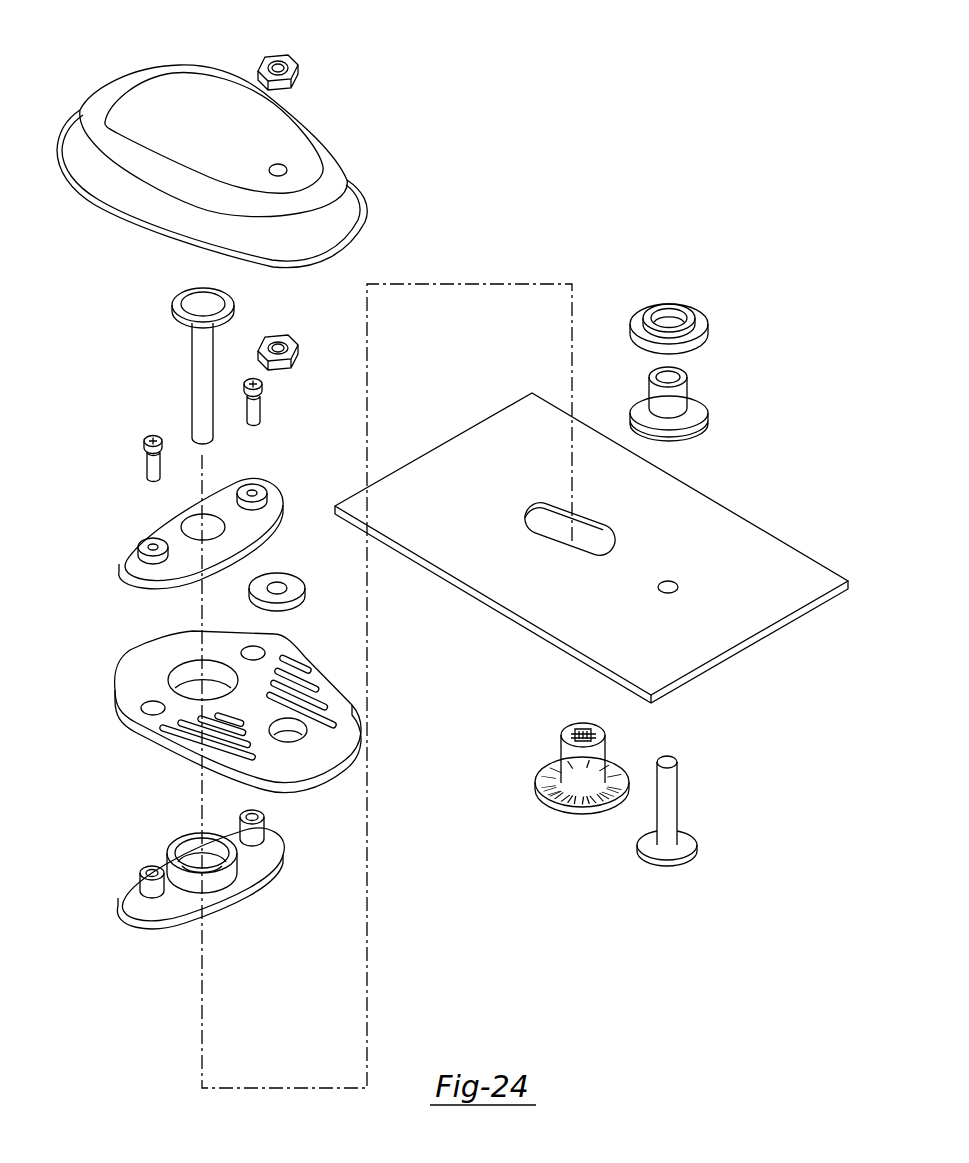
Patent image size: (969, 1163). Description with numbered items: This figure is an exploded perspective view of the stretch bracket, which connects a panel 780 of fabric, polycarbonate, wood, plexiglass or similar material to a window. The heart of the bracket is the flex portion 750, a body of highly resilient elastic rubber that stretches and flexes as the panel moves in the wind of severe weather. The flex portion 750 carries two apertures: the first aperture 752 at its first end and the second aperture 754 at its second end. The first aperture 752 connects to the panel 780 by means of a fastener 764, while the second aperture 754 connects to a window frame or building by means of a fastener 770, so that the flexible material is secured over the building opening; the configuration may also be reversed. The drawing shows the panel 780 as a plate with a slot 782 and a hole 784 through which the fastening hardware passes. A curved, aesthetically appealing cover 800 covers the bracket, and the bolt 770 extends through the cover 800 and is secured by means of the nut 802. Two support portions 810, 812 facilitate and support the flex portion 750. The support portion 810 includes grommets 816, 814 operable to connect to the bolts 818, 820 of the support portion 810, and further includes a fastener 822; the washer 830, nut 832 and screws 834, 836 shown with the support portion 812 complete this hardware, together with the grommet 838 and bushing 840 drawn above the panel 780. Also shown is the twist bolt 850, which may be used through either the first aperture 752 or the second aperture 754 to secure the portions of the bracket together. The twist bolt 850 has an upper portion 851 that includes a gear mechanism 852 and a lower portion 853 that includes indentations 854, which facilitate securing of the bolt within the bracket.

The flex portion 750 is at (130, 677).
The first aperture 752 is at (190, 677).
The second aperture 754 is at (285, 730).
The fastener 764 is at (198, 348).
The fastener 770 is at (672, 792).
The panel 780 is at (763, 552).
The slot 782 is at (590, 537).
The hole 784 is at (670, 583).
The cover 800 is at (347, 210).
The nut 802 is at (153, 83).
The support portion 810 is at (262, 871).
The support portion 812 is at (170, 513).
The grommet 814 is at (240, 490).
The grommet 816 is at (140, 546).
The bolt 818 is at (146, 868).
The bolt 820 is at (258, 829).
The fastener 822 is at (171, 846).
The washer 830 is at (293, 583).
The nut 832 is at (291, 360).
The screw 834 is at (257, 407).
The screw 836 is at (148, 458).
The grommet 838 is at (688, 315).
The bushing 840 is at (690, 395).
The twist bolt 850 is at (565, 752).
The upper portion 851 is at (595, 727).
The gear mechanism 852 is at (578, 728).
The lower portion 853 is at (582, 806).
The indentations 854 is at (575, 786).